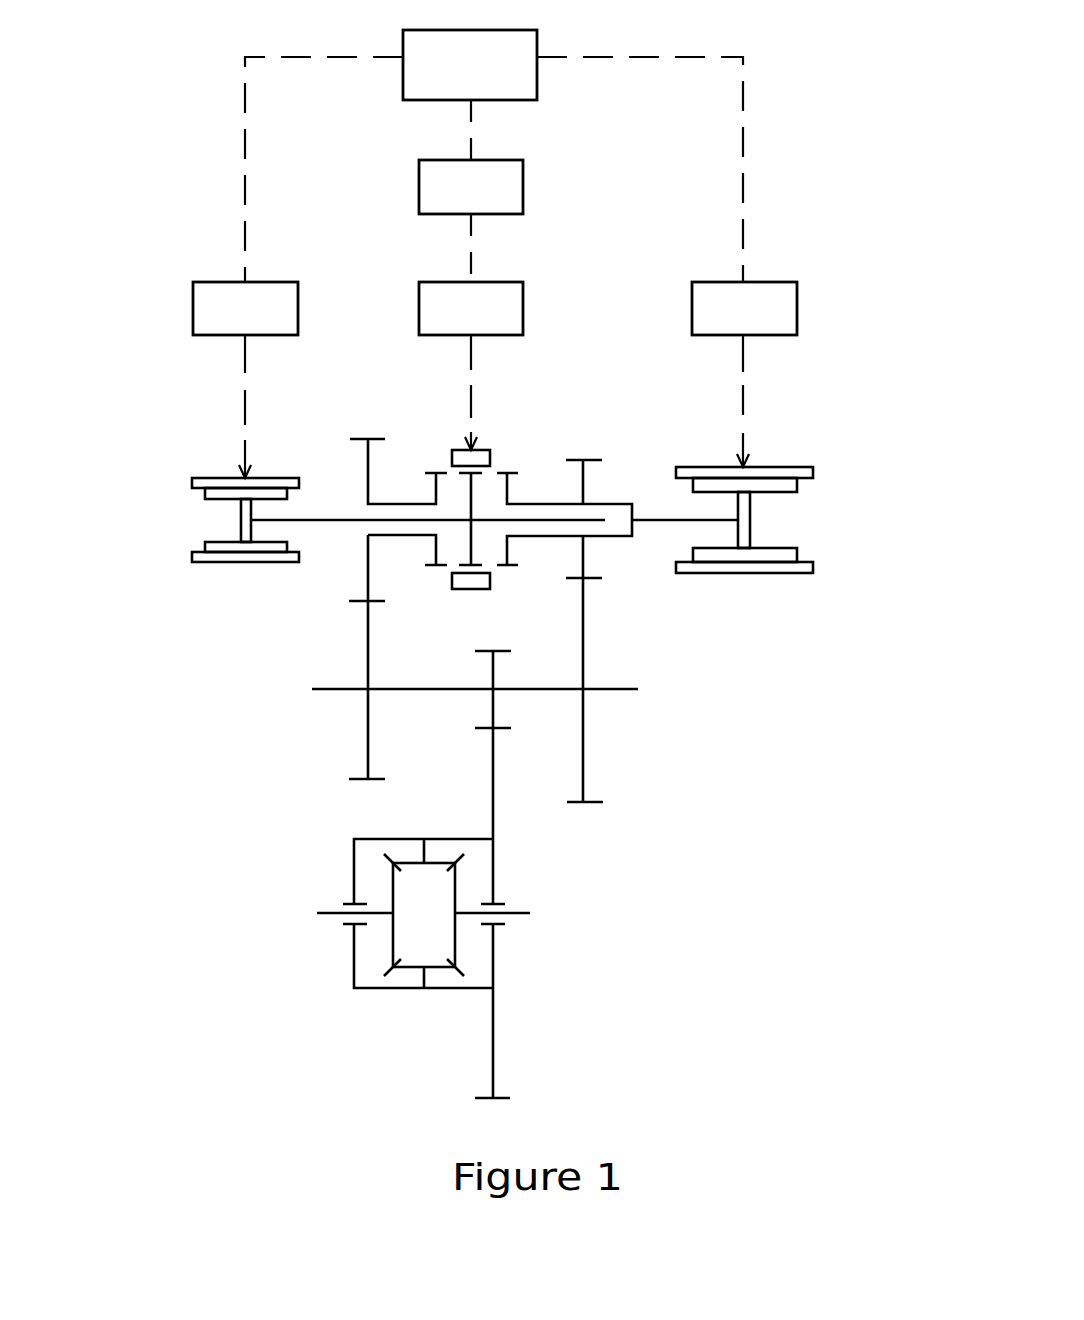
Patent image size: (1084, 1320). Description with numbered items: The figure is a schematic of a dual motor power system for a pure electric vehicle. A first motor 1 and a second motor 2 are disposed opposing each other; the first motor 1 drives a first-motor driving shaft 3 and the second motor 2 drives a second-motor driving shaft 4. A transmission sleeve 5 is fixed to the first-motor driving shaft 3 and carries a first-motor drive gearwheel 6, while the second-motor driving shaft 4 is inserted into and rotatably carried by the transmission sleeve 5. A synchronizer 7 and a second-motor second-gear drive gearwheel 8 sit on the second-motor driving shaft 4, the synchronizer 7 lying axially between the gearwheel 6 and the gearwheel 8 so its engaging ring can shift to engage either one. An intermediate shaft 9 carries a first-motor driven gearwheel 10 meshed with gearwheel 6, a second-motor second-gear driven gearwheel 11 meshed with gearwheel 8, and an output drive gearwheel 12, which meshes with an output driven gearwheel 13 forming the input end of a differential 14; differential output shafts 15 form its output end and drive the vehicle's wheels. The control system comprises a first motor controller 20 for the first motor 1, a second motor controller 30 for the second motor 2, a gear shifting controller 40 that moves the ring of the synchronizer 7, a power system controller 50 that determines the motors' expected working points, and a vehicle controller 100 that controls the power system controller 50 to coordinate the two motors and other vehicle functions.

The first motor 1 is at (792, 467).
The second motor 2 is at (206, 478).
The first-motor driving shaft 3 is at (660, 527).
The second-motor driving shaft 4 is at (343, 523).
The transmission sleeve 5 is at (618, 502).
The first-motor drive gearwheel 6 is at (580, 458).
The synchronizer 7 is at (433, 432).
The second-motor second-gear drive gearwheel 8 is at (360, 439).
The intermediate shaft 9 is at (622, 695).
The first-motor driven gearwheel 10 is at (586, 625).
The second-motor second-gear driven gearwheel 11 is at (368, 735).
The output drive gearwheel 12 is at (490, 670).
The output driven gearwheel 13 is at (493, 770).
The differential 14 is at (353, 872).
The differential output shafts 15 is at (520, 917).
The first motor controller 20 is at (744, 308).
The second motor controller 30 is at (245, 308).
The gear shifting controller 40 is at (471, 308).
The power system controller 50 is at (471, 187).
The vehicle controller 100 is at (470, 65).